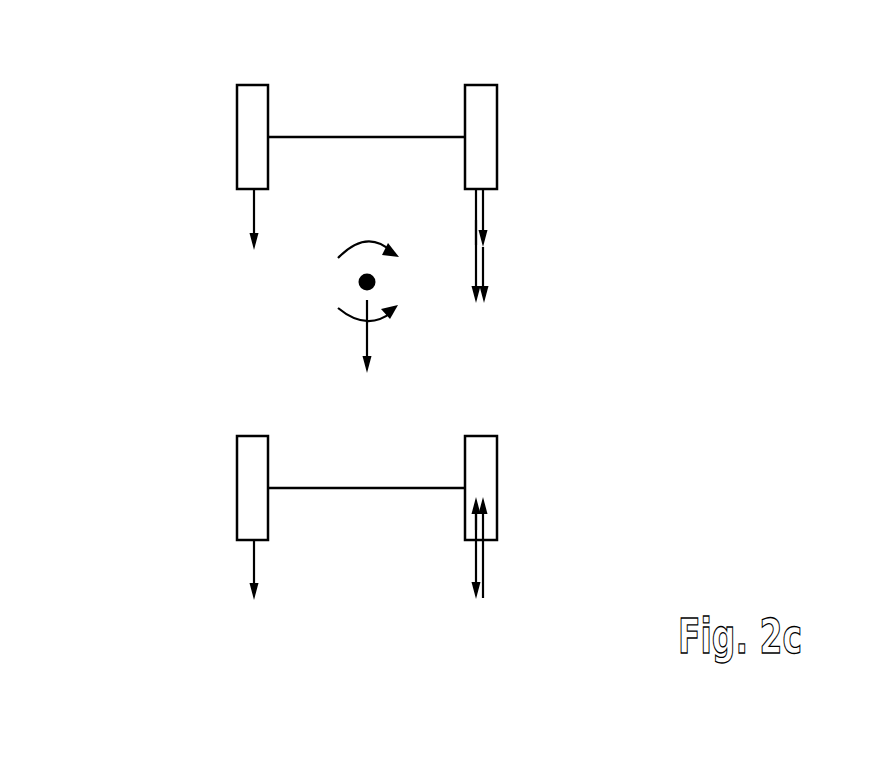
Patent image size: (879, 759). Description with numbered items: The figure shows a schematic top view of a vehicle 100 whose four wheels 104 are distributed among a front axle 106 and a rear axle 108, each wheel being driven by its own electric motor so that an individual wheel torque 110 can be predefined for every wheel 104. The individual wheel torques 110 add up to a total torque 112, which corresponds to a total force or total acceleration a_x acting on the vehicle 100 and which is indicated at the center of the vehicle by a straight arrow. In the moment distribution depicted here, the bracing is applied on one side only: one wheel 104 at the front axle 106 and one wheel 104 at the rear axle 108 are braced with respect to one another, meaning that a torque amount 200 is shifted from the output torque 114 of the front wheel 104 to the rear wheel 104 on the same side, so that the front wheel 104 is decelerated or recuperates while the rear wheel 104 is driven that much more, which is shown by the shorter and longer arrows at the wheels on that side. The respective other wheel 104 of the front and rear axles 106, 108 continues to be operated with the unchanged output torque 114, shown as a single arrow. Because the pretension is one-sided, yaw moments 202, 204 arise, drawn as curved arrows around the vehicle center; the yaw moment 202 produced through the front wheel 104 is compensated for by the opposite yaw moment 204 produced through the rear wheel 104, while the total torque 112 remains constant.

The vehicle 100 is at (128, 68).
The wheel 104 is at (237, 135).
The front axle 106 is at (367, 487).
The rear axle 108 is at (367, 136).
The wheel torque 110 is at (476, 232).
The total torque 112 is at (367, 340).
The output torque 114 is at (254, 211).
The torque amount 200 is at (483, 265).
The yaw moment 202 is at (338, 310).
The yaw moment 204 is at (367, 242).